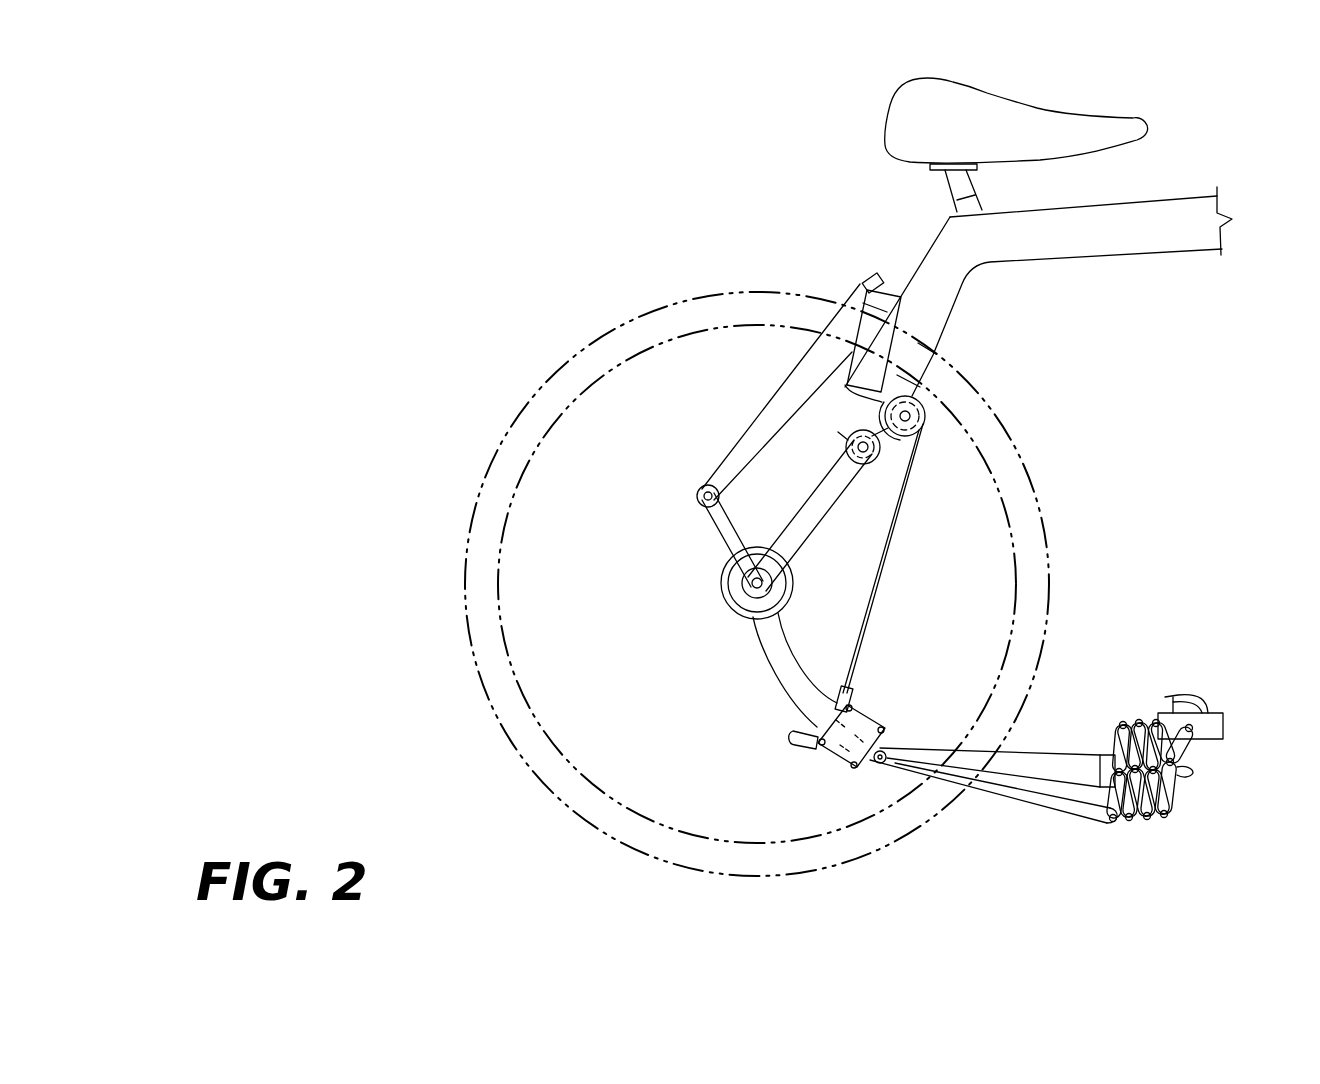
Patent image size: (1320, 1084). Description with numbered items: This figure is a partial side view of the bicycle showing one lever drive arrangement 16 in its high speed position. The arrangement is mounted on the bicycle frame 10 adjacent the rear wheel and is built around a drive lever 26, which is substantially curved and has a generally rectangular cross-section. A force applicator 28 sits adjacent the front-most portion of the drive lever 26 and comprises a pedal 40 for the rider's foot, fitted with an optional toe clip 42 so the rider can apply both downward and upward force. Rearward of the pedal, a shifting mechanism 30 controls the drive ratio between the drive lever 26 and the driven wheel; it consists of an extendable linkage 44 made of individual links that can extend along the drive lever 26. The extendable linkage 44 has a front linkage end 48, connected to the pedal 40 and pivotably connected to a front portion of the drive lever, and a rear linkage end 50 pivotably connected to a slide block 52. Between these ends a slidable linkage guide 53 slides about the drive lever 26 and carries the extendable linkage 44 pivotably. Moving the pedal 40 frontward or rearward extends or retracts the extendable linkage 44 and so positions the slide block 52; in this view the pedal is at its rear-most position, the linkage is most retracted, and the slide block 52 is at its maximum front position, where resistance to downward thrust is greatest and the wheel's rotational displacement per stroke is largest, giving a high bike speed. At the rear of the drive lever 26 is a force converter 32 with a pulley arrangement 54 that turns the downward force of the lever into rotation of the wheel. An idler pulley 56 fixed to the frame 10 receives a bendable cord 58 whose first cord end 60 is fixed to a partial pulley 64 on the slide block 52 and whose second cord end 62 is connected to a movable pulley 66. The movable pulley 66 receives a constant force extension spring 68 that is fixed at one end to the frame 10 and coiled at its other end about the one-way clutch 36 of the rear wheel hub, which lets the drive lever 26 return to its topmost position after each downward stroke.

The frame 10 is at (1172, 215).
The lever drive arrangement 16 is at (1093, 692).
The drive lever 26 is at (950, 790).
The force applicator 28 is at (1188, 757).
The shifting mechanism 30 is at (1183, 821).
The force converter 32 is at (830, 770).
The one-way clutch 36 is at (745, 582).
The pedal 40 is at (1215, 728).
The toe clip 42 is at (1200, 708).
The extendable linkage 44 is at (1165, 795).
The front linkage end 48 is at (1192, 740).
The rear linkage end 50 is at (885, 750).
The slide block 52 is at (866, 694).
The slidable linkage guide 53 is at (1100, 770).
The pulley arrangement 54 is at (948, 432).
The idler pulley 56 is at (915, 395).
The bendable cord 58 is at (900, 548).
The first cord end 60 is at (797, 742).
The second cord end 62 is at (876, 420).
The partial pulley 64 is at (842, 690).
The movable pulley 66 is at (856, 446).
The constant force extension spring 68 is at (792, 512).